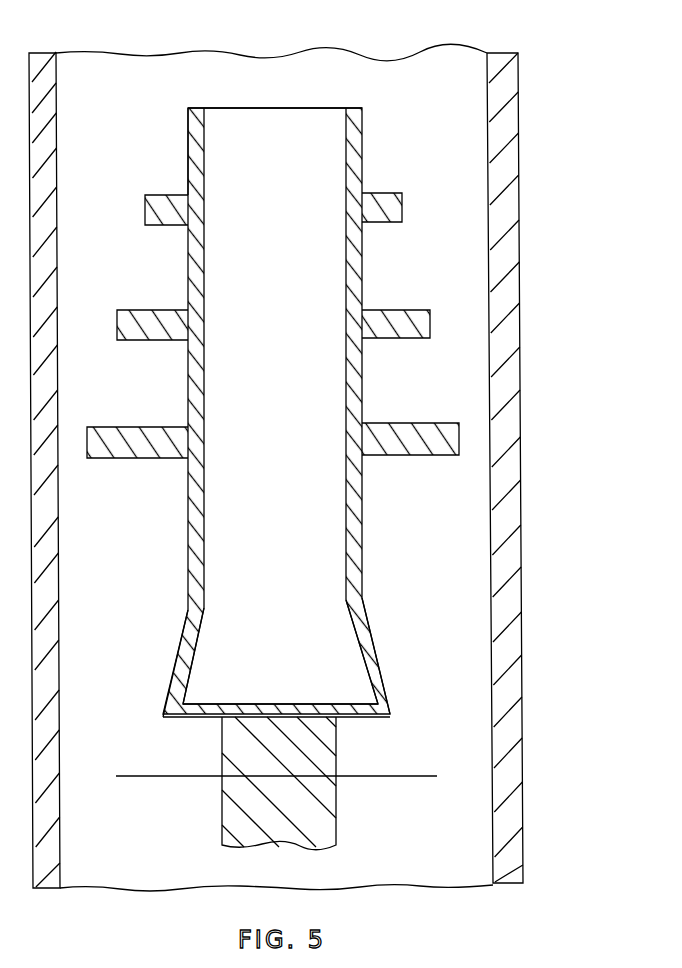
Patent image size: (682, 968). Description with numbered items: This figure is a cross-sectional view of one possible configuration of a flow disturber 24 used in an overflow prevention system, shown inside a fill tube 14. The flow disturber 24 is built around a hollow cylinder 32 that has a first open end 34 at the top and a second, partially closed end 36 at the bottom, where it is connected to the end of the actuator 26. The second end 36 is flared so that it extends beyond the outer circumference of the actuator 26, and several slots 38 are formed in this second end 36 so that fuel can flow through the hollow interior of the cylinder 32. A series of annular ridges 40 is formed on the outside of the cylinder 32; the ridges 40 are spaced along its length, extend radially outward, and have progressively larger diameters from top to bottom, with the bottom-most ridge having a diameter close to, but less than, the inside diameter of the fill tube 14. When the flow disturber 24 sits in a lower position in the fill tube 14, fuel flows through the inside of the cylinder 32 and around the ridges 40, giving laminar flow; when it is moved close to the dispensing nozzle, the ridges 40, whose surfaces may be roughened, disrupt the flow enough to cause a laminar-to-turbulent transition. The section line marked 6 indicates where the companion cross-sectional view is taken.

The fill tube 14 is at (520, 200).
The flow disturber 24 is at (364, 175).
The actuator 26 is at (338, 826).
The hollow cylinder 32 is at (186, 155).
The first open end 34 is at (327, 108).
The second end 36 is at (346, 716).
The slots 38 is at (178, 684).
The annular ridges 40 is at (404, 212).
The section line 6- 6 is at (421, 740).